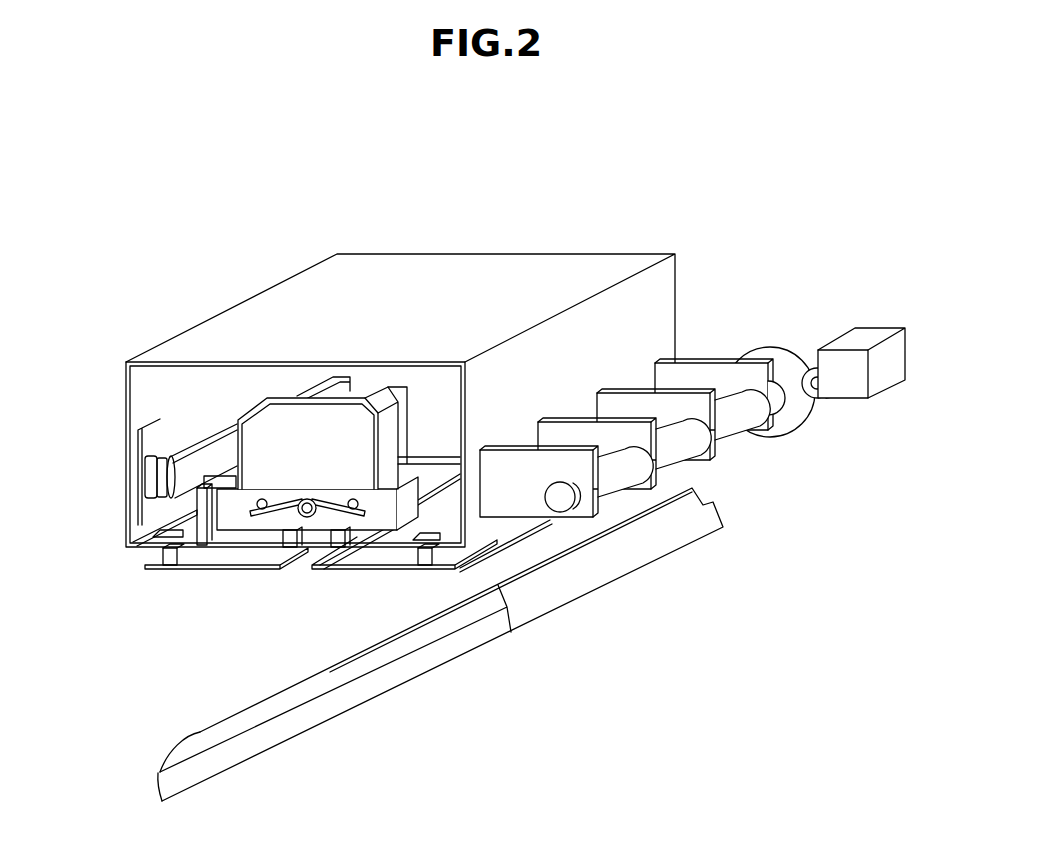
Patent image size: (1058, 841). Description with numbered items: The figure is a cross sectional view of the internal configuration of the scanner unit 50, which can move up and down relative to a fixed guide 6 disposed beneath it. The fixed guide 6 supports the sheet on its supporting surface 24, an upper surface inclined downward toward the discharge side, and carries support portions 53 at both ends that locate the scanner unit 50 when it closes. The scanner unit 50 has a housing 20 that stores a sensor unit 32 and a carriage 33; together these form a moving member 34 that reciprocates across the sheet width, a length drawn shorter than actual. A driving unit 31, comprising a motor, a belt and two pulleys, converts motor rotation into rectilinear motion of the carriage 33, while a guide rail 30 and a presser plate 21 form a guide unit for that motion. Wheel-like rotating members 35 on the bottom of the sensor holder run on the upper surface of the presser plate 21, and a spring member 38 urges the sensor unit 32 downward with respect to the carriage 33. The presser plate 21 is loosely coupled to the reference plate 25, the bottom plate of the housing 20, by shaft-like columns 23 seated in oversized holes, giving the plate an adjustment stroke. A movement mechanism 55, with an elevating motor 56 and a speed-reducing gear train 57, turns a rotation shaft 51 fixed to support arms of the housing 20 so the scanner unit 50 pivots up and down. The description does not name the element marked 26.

The fixed guide 6 is at (440, 644).
The housing 20 is at (166, 342).
The presser plate 21 is at (226, 569).
The column 23 is at (172, 569).
The supporting surface 24 is at (385, 645).
The reference plate 25 is at (150, 536).
The gap 26 is at (300, 582).
The guide rail 30 is at (202, 517).
The driving unit 31 is at (203, 441).
The sensor unit 32 is at (347, 433).
The carriage 33 is at (382, 514).
The moving member 34 is at (358, 333).
The rotating members 35 is at (284, 550).
The spring member 38 is at (307, 498).
The scanner unit 50 is at (198, 300).
The rotation shaft 51 is at (672, 450).
The support portions 53 is at (220, 742).
The movement mechanism 55 is at (818, 319).
The elevating motor 56 is at (861, 321).
The gear train 57 is at (792, 346).